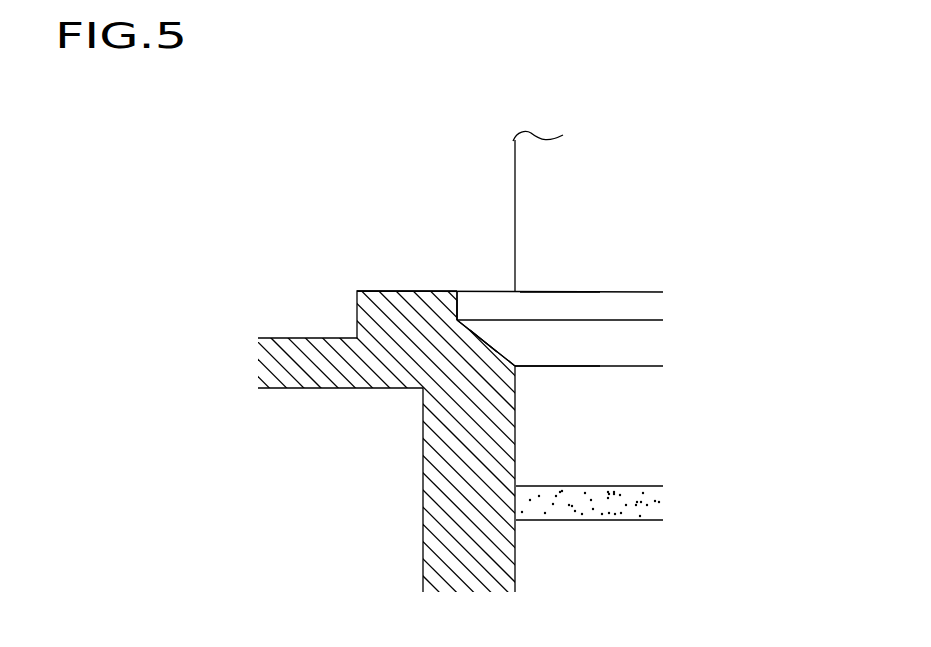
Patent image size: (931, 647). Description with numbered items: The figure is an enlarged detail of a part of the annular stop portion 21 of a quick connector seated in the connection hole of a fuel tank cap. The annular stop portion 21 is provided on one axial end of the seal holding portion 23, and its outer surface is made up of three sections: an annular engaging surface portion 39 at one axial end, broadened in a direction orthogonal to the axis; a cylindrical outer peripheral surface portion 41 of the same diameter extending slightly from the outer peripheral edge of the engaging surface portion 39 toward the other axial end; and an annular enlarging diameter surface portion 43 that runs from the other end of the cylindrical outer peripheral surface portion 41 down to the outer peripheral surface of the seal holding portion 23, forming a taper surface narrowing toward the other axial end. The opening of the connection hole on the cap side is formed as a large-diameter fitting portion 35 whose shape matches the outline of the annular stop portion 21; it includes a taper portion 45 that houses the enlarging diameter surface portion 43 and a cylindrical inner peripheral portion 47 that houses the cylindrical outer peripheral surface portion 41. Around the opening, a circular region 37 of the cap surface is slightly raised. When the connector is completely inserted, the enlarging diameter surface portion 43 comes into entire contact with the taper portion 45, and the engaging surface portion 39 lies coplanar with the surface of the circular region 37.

The annular stop portion 21 is at (628, 320).
The seal holding portion 23 is at (543, 430).
The fitting portion 35 is at (520, 353).
The circular region 37 is at (379, 312).
The engaging surface portion 39 is at (550, 292).
The cylindrical outer peripheral surface portion 41 is at (457, 312).
The enlarging diameter surface portion 43 is at (483, 342).
The taper portion 45 is at (497, 350).
The cylindrical inner peripheral portion 47 is at (457, 297).